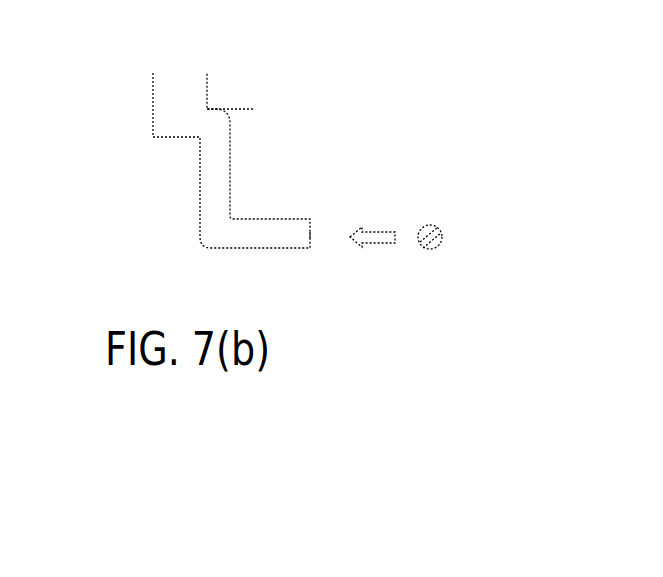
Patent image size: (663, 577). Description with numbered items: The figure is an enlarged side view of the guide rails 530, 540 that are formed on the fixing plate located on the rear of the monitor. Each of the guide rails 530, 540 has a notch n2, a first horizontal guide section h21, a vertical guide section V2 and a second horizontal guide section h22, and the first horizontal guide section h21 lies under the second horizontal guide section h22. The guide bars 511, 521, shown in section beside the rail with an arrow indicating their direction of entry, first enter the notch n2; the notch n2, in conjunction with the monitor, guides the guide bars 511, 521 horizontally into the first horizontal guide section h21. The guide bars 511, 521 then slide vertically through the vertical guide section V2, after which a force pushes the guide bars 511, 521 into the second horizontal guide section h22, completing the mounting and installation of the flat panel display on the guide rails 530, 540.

The guide rail 530 is at (275, 142).
The guide rail 540 is at (398, 68).
The guide bar 511 is at (436, 267).
The guide bar 521 is at (428, 249).
The second horizontal guide section h22 is at (207, 73).
The first horizontal guide section h21 is at (310, 262).
The vertical guide section V2 is at (250, 109).
The notch n2 is at (311, 236).